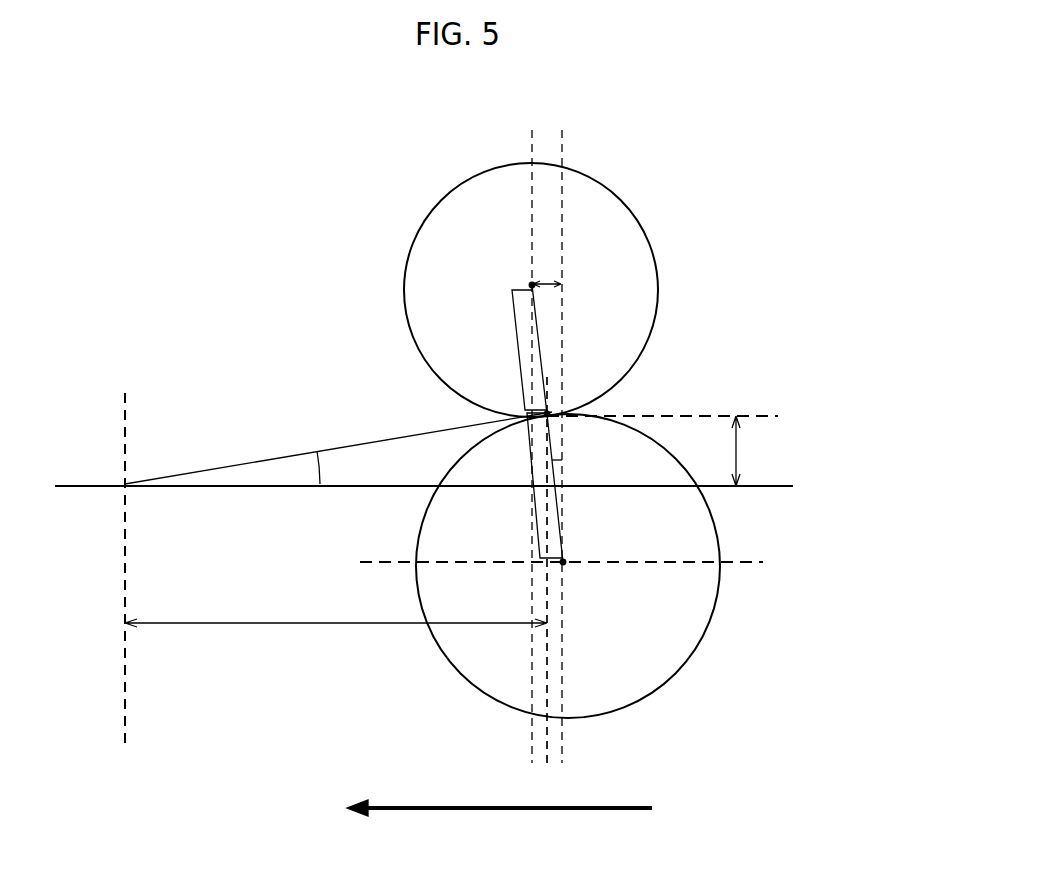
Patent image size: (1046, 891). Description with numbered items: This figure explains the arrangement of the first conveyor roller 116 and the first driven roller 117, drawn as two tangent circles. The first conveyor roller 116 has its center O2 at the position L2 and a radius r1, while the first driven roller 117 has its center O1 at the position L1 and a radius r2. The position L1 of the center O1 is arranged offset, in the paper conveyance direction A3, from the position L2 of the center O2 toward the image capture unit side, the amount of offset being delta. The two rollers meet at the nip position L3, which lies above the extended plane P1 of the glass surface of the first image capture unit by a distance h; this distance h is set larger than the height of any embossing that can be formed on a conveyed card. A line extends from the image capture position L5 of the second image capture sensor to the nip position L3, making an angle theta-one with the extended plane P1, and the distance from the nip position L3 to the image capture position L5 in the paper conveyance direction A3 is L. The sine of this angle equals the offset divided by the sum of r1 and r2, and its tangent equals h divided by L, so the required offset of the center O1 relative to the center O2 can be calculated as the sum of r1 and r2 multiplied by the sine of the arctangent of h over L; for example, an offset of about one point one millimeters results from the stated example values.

The first conveyor roller 116 is at (689, 645).
The first driven roller 117 is at (621, 218).
The position of the center O1 L1 is at (532, 140).
The position of the center O2 L2 is at (563, 140).
The nip position L3 is at (550, 396).
The image capture position L5 is at (123, 480).
The extended plane P1 is at (790, 487).
The center of the first driven roller O1 is at (531, 283).
The center of the first conveyor roller O2 is at (565, 566).
The radius of the first conveyor roller r1 is at (533, 490).
The radius of the first driven roller r2 is at (518, 352).
The distance between the nip position and the extended plane h is at (745, 451).
The distance from the nip position to the image capture position L is at (336, 637).
The paper conveyance direction A3 is at (499, 826).